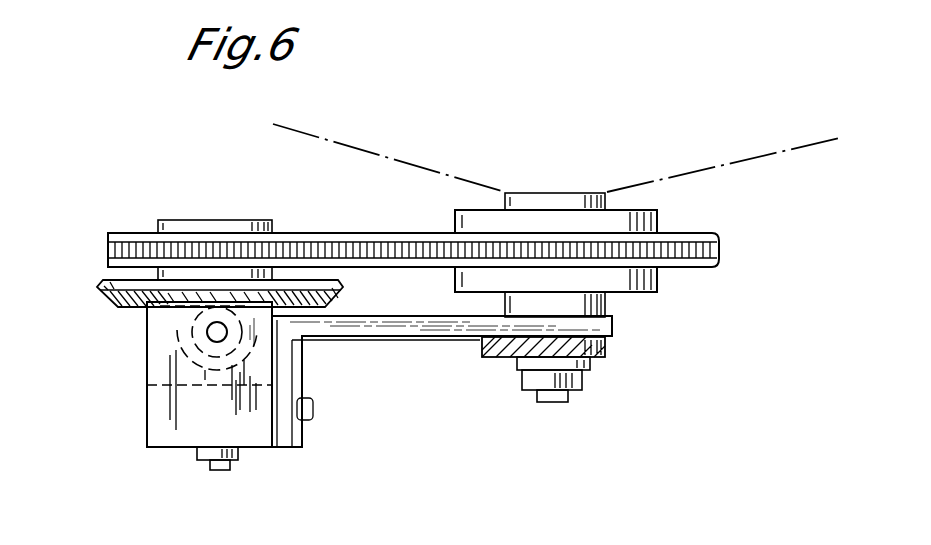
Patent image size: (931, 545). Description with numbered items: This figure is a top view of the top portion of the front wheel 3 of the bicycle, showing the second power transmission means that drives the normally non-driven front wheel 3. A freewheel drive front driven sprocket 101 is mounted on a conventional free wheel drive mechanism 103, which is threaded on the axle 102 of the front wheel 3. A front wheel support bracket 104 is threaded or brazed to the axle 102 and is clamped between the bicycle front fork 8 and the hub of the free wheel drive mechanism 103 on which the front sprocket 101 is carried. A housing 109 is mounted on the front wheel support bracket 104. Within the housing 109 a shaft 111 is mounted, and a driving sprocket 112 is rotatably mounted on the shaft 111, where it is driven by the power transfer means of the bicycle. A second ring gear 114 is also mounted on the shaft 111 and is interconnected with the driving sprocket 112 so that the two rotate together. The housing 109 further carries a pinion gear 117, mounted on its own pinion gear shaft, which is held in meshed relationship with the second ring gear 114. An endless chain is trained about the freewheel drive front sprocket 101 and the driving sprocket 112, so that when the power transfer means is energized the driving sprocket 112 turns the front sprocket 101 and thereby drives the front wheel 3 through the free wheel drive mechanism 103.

The front wheel 3 is at (797, 148).
The freewheel drive front driven sprocket 101 is at (700, 268).
The driving sprocket 112 is at (132, 233).
The second ring gear 114 is at (103, 289).
The housing 109 is at (147, 405).
The pinion gear 117 is at (172, 343).
The front wheel support bracket 104 is at (401, 330).
The free wheel drive mechanism 103 is at (603, 305).
The bicycle front fork 8 is at (603, 343).
The axle 102 is at (537, 395).
The shaft 111 is at (218, 470).